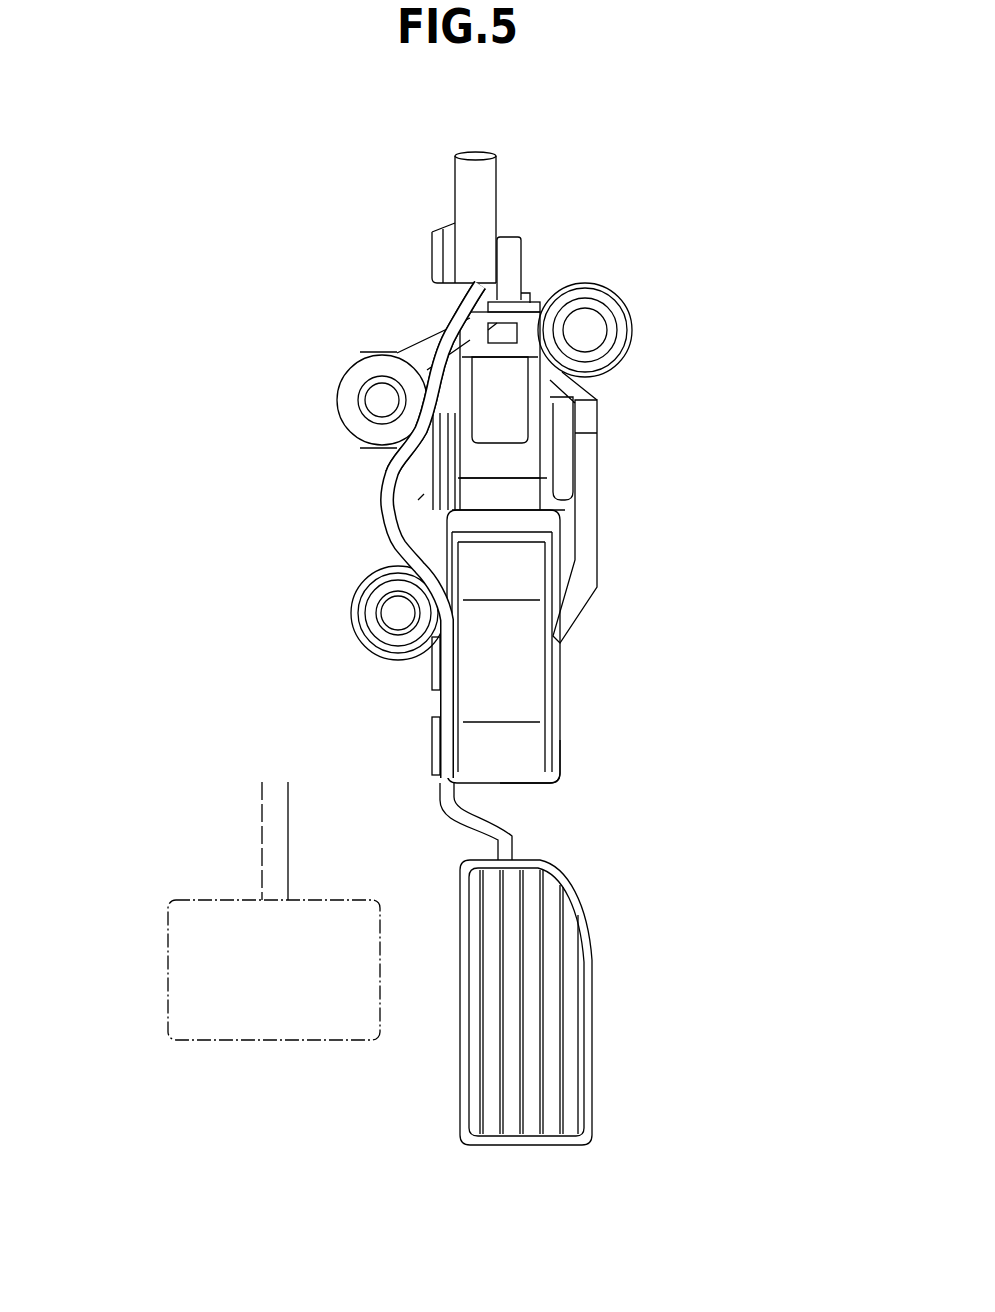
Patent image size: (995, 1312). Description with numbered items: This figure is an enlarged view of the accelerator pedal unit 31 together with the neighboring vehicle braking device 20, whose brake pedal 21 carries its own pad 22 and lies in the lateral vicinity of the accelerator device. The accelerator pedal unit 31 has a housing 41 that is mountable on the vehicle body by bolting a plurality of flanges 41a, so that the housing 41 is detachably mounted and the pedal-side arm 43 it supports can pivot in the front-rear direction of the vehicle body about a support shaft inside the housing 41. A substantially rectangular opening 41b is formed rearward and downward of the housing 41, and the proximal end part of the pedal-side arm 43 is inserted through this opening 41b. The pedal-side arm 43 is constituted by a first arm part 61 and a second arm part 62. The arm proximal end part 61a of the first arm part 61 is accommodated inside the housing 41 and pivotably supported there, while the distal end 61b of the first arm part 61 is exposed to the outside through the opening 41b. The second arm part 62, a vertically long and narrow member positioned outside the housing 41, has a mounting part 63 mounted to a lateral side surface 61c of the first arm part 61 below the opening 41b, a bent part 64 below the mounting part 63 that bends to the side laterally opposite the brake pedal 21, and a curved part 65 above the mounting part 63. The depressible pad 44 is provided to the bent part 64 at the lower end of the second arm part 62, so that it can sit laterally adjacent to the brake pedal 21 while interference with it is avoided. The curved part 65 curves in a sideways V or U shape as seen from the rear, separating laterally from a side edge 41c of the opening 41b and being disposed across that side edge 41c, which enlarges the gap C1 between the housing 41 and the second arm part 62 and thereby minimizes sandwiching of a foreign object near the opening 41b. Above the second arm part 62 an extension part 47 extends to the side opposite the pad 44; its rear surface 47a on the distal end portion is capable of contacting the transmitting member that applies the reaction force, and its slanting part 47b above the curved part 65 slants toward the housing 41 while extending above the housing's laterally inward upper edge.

The vehicle braking device 20 is at (232, 825).
The brake pedal 21 is at (262, 873).
The pad 22 is at (168, 980).
The accelerator pedal unit 31 is at (267, 140).
The housing 41 is at (533, 465).
The flanges 41a is at (632, 328).
The opening 41b is at (535, 525).
The side edge 41c is at (447, 515).
The pedal-side arm 43 is at (712, 647).
The pad 44 is at (575, 1013).
The extension part 47 is at (498, 188).
The rear surface 47a is at (482, 224).
The slanting part 47b is at (450, 333).
The first arm part 61 is at (522, 657).
The arm proximal end part 61a is at (532, 570).
The distal end 61b is at (530, 748).
The lateral side surface 61c is at (560, 783).
The second arm part 62 is at (455, 677).
The mounting part 63 is at (440, 703).
The bent part 64 is at (467, 827).
The curved part 65 is at (387, 527).
The gap C1 is at (420, 497).